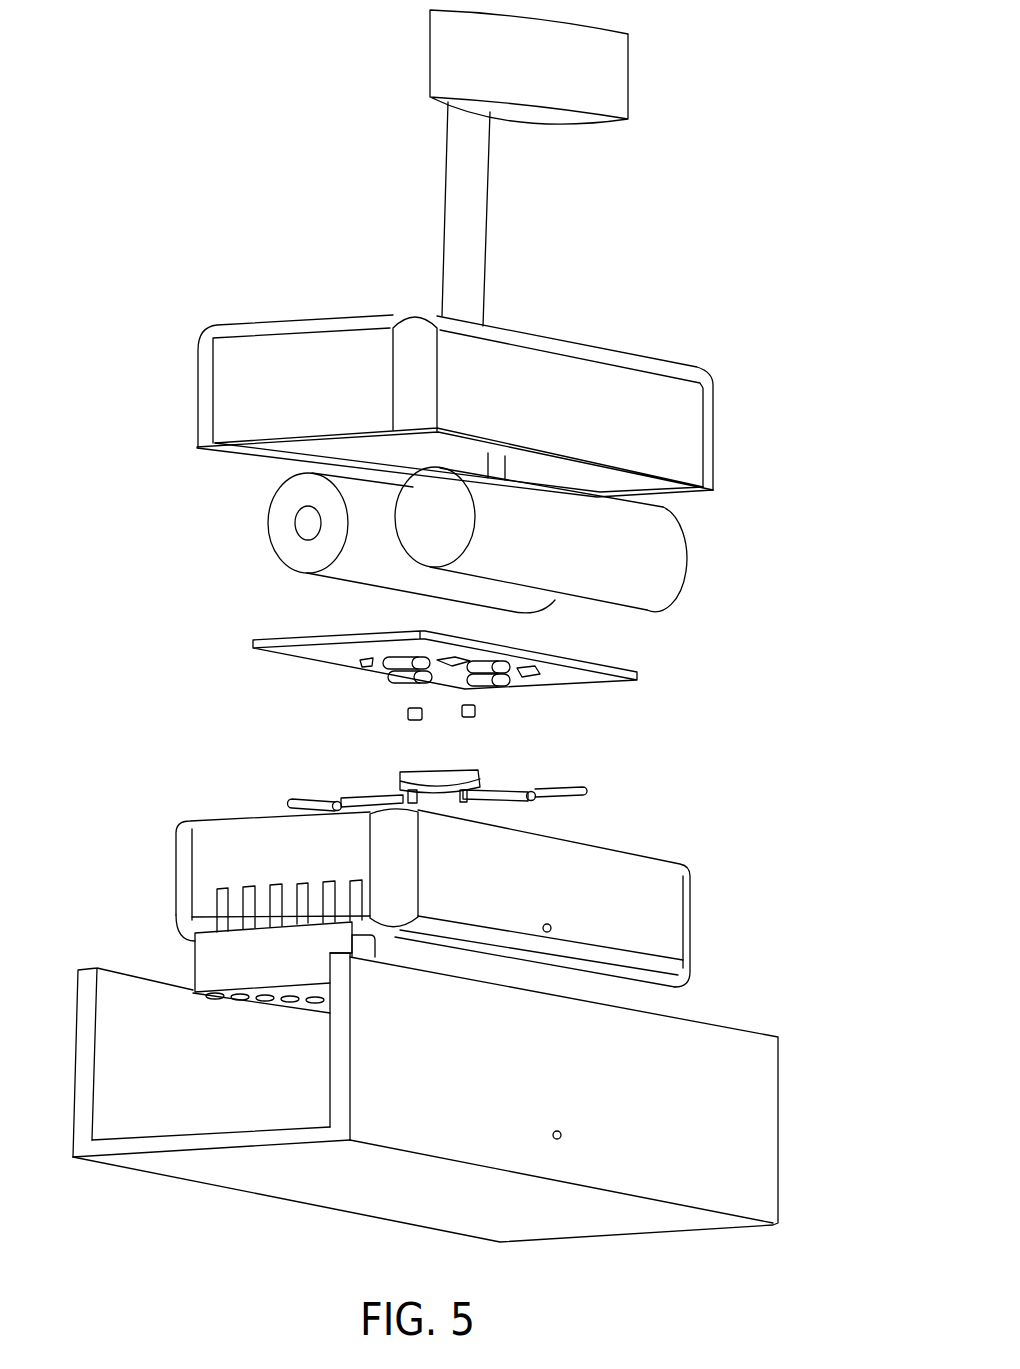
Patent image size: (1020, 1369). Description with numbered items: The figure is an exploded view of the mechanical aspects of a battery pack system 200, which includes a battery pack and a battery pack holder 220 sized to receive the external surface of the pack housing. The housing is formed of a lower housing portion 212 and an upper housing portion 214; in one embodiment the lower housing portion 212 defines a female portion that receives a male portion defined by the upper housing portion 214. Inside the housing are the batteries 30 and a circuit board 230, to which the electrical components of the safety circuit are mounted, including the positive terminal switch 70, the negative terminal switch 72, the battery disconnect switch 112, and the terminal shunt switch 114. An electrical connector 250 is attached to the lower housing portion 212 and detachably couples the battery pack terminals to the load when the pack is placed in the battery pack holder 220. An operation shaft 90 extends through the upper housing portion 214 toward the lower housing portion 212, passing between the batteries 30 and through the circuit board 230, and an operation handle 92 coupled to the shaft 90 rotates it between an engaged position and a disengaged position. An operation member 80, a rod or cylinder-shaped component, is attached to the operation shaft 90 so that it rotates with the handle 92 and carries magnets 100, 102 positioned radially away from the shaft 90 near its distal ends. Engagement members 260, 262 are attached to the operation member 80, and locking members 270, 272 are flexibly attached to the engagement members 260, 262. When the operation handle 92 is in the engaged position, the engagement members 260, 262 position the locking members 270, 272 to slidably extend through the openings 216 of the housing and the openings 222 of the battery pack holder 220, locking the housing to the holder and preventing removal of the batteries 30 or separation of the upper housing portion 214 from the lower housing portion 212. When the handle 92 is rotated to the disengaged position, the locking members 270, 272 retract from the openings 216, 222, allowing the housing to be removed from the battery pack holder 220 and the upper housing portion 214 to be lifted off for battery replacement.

The battery pack system 200 is at (755, 188).
The operation handle 92 is at (622, 75).
The operation shaft 90 is at (448, 232).
The upper housing portion 214 is at (695, 418).
The battery 30 is at (296, 526).
The circuit board 230 is at (253, 643).
The terminal shunt switch 114 is at (397, 661).
The negative terminal switch 72 is at (388, 680).
The positive terminal switch 70 is at (498, 668).
The battery disconnect switch 112 is at (515, 685).
The magnet 102 is at (406, 716).
The magnet 100 is at (472, 717).
The operation member 80 is at (441, 772).
The locking member 272 is at (290, 801).
The engagement member 262 is at (372, 798).
The engagement member 260 is at (498, 800).
The locking member 270 is at (553, 773).
The lower housing portion 212 is at (668, 883).
The opening 216 is at (551, 925).
The electrical connector 250 is at (193, 955).
The battery pack holder 220 is at (775, 1097).
The opening 222 is at (562, 1133).